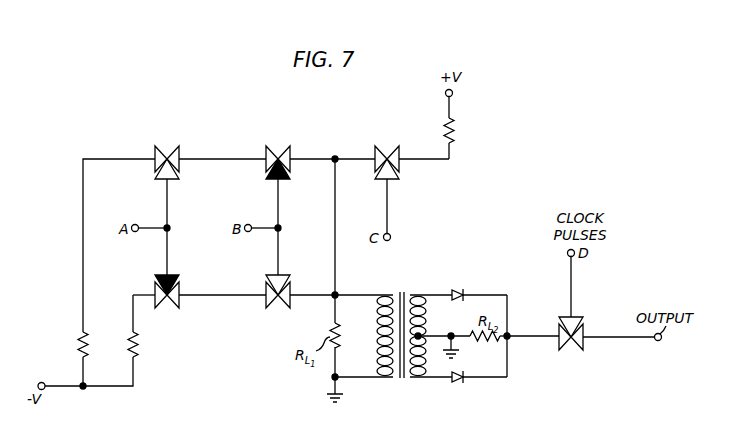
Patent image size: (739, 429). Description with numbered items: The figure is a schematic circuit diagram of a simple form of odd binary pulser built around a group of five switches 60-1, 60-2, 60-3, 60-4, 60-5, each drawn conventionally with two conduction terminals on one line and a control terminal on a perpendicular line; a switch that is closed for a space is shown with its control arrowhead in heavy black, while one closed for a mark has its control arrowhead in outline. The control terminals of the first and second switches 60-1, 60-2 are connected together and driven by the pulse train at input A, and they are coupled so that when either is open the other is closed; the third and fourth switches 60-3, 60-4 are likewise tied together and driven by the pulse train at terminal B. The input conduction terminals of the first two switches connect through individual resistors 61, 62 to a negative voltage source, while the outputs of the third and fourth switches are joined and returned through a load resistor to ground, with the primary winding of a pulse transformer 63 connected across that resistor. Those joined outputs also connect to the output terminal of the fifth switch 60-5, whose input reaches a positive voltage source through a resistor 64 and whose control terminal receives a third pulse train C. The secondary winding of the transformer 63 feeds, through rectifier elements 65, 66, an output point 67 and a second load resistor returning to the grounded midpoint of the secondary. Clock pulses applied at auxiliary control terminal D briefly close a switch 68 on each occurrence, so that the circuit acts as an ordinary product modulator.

The first switch 60-1 is at (170, 145).
The second switch 60-2 is at (167, 303).
The third switch 60-3 is at (281, 145).
The fourth switch 60-4 is at (275, 303).
The fifth switch 60-5 is at (390, 146).
The resistor 61 is at (78, 342).
The resistor 62 is at (142, 351).
The pulse transformer 63 is at (402, 292).
The resistor 64 is at (458, 131).
The rectifier element 65 is at (458, 290).
The rectifier element 66 is at (456, 383).
The output point 67 is at (510, 340).
The switch 68 is at (567, 345).